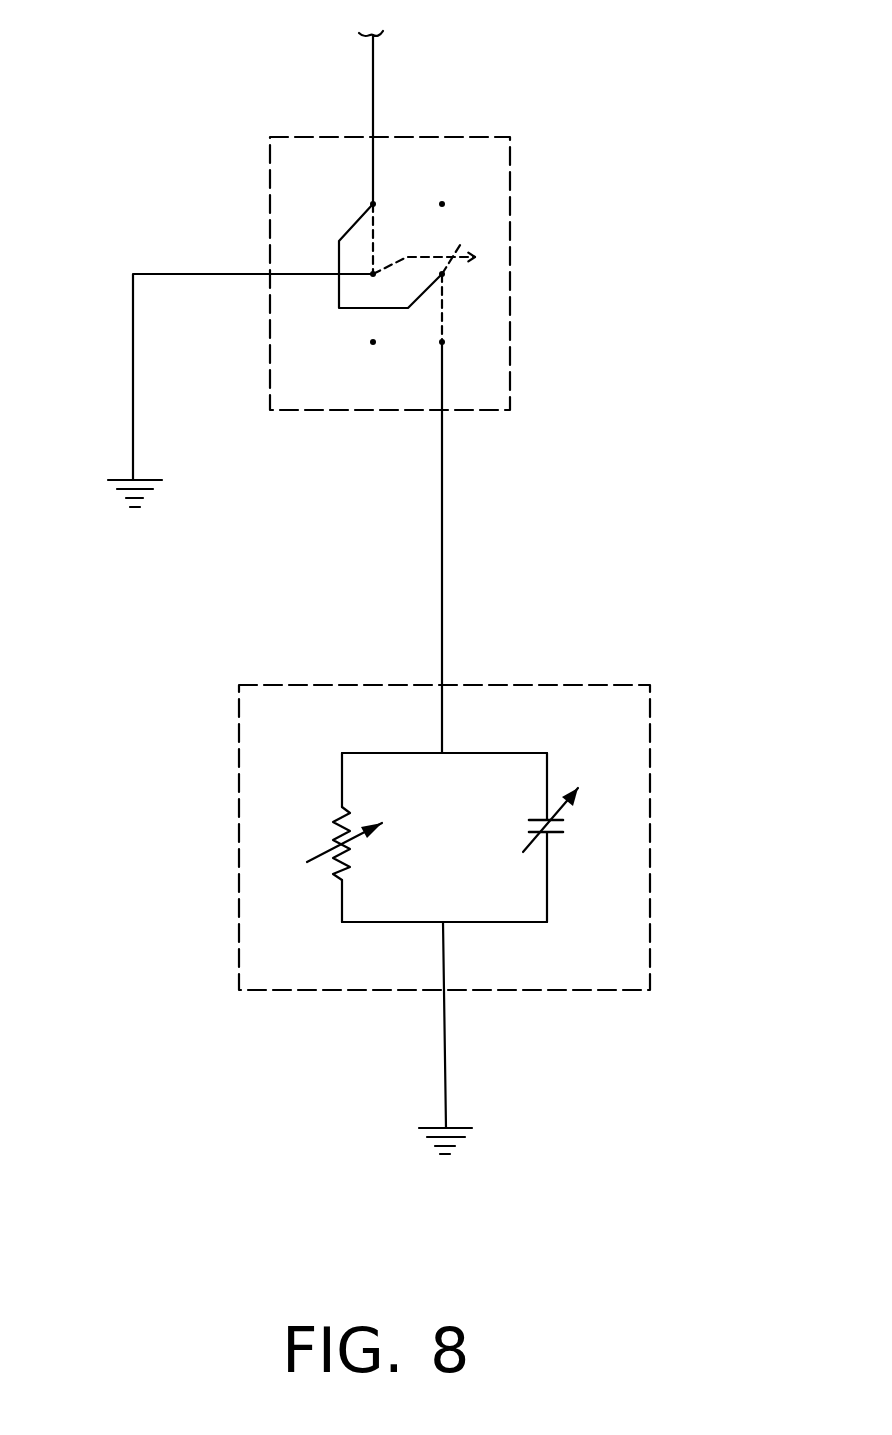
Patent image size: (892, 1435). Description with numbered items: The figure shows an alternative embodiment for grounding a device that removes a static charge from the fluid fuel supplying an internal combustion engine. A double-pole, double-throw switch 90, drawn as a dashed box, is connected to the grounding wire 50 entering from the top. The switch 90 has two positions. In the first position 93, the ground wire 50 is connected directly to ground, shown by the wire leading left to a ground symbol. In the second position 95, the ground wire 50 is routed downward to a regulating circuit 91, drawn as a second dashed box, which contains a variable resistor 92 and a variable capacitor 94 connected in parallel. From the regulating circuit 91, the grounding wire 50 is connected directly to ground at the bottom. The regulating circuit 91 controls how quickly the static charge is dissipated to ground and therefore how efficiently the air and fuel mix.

The grounding wire 50 is at (373, 105).
The double-pole, double-throw switch 90 is at (478, 137).
The regulating circuit 91 is at (625, 685).
The variable resistor 92 is at (353, 843).
The first position 93 is at (375, 236).
The variable capacitor 94 is at (560, 838).
The second position 95 is at (442, 308).